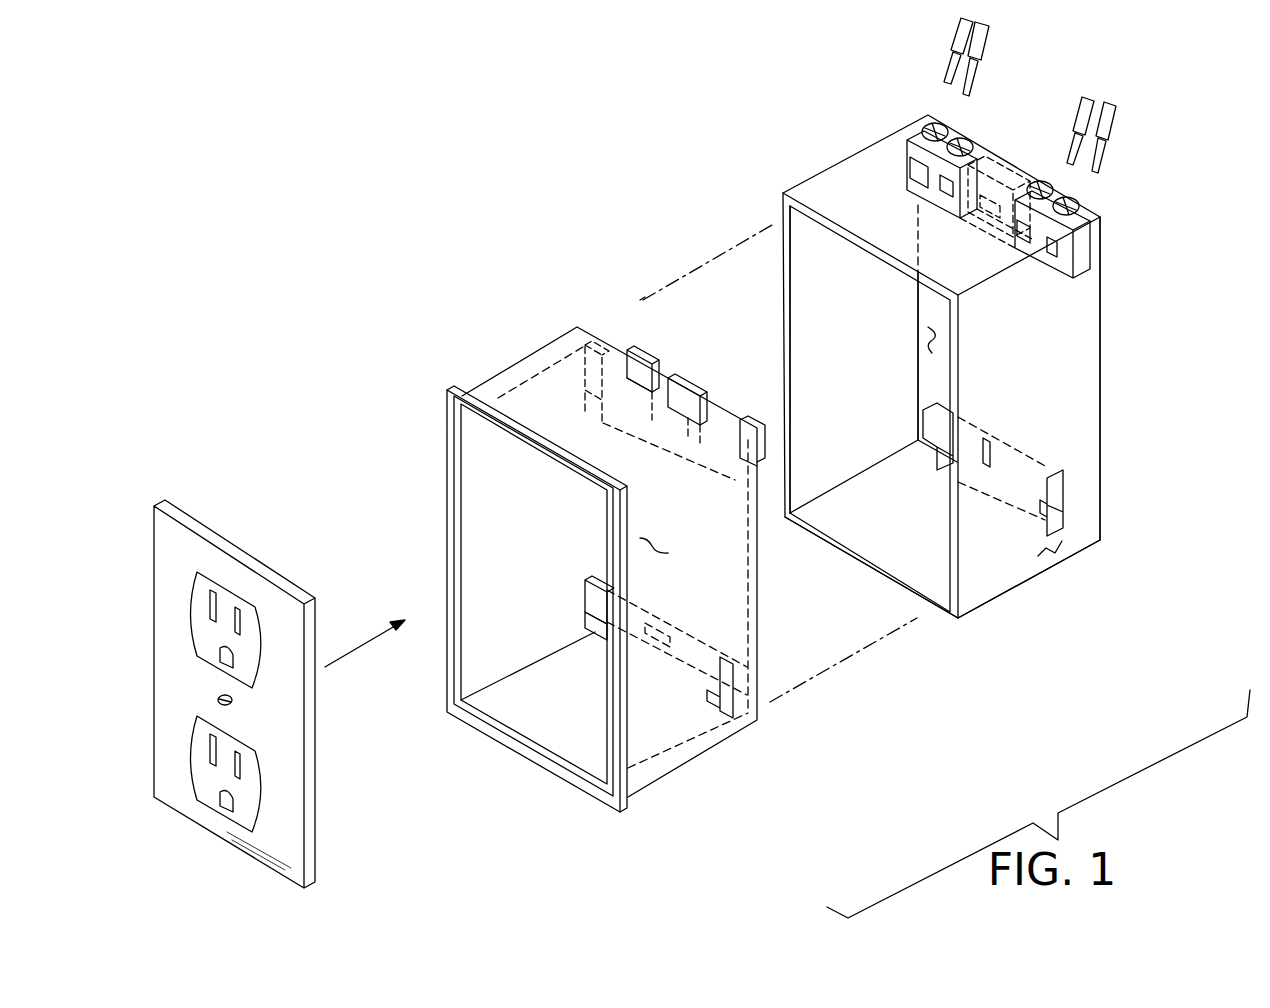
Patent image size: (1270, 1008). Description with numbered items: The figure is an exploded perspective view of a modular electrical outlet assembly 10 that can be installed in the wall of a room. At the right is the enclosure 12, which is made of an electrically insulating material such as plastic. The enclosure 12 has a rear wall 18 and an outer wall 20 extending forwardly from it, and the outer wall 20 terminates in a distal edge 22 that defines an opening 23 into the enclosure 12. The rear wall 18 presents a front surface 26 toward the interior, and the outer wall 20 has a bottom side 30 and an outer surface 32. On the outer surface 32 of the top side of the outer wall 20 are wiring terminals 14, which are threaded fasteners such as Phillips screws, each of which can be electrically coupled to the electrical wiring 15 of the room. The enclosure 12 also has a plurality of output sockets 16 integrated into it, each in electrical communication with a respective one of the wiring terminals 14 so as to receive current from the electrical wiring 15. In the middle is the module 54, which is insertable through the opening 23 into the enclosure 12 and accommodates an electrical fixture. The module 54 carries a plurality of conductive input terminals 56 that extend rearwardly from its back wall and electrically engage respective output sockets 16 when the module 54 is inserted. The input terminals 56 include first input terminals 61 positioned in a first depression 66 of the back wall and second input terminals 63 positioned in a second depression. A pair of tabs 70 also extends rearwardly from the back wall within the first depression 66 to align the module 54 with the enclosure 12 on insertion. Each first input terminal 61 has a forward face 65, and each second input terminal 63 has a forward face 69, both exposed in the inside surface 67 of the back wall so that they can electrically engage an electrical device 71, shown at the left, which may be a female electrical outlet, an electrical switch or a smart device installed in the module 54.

The modular electrical outlet assembly 10 is at (670, 181).
The enclosure 12 is at (885, 143).
The wiring terminals 14 is at (940, 122).
The electrical wiring 15 is at (955, 50).
The output sockets 16 is at (932, 197).
The rear wall 18 is at (1100, 300).
The outer wall 20 is at (1013, 563).
The distal edge 22 is at (915, 596).
The opening 23 is at (848, 302).
The front surface 26 is at (928, 348).
The bottom side 30 is at (1000, 597).
The outer surface 32 is at (1055, 550).
The module 54 is at (547, 342).
The input terminals 56 is at (585, 382).
The first input terminals 61 is at (485, 480).
The second input terminals 63 is at (735, 658).
The forward face 65 is at (618, 383).
The first depression 66 is at (765, 437).
The inside surface 67 is at (640, 548).
The forward face 69 is at (593, 634).
The tabs 70 is at (687, 380).
The electrical device 71 is at (188, 512).